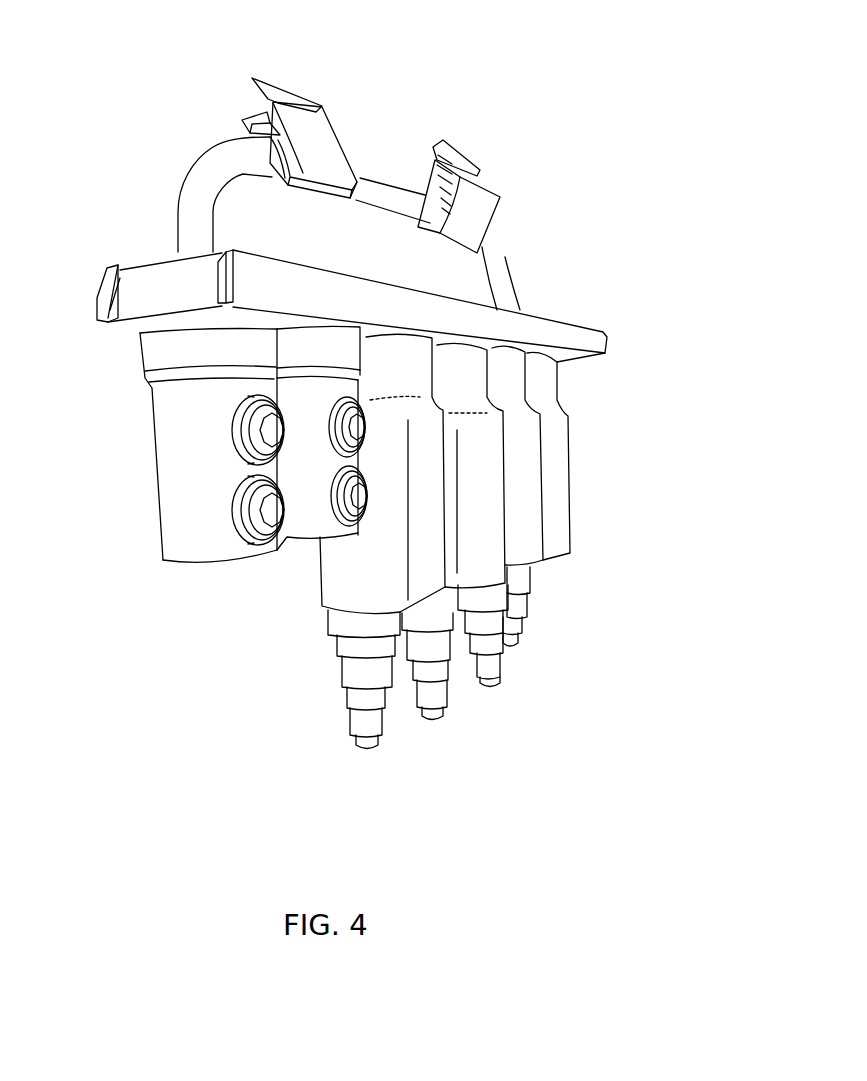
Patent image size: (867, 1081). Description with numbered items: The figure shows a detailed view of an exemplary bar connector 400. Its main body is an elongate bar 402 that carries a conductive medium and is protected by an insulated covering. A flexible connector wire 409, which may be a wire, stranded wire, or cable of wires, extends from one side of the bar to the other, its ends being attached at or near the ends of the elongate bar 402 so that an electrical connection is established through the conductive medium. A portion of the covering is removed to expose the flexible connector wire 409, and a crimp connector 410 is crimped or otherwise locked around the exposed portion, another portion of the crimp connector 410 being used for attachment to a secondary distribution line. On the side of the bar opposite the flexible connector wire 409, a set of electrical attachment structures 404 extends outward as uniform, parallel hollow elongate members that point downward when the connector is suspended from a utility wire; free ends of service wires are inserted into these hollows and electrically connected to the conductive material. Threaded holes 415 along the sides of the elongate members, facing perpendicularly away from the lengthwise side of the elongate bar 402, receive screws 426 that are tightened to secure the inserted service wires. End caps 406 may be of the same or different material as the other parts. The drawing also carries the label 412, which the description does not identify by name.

The bar connector 400 is at (545, 73).
The elongate bar 402 is at (604, 338).
The electrical attachment structures 404 is at (297, 352).
The end caps 406 is at (447, 467).
The flexible connector wire 409 is at (248, 132).
The crimp connector 410 is at (339, 128).
The tube 412 is at (180, 182).
The threaded holes 415 is at (237, 430).
The screws 426 is at (240, 448).